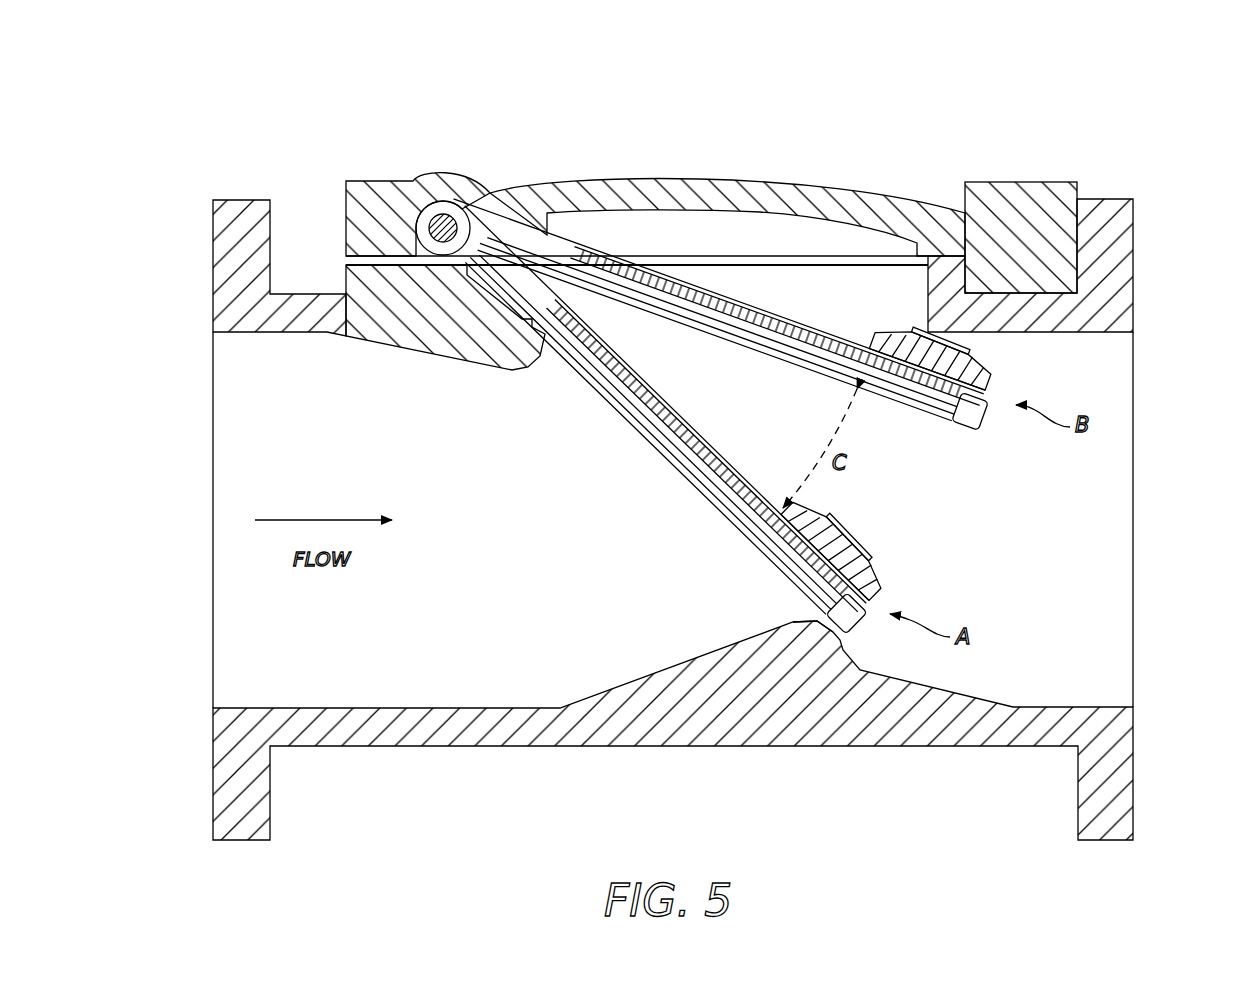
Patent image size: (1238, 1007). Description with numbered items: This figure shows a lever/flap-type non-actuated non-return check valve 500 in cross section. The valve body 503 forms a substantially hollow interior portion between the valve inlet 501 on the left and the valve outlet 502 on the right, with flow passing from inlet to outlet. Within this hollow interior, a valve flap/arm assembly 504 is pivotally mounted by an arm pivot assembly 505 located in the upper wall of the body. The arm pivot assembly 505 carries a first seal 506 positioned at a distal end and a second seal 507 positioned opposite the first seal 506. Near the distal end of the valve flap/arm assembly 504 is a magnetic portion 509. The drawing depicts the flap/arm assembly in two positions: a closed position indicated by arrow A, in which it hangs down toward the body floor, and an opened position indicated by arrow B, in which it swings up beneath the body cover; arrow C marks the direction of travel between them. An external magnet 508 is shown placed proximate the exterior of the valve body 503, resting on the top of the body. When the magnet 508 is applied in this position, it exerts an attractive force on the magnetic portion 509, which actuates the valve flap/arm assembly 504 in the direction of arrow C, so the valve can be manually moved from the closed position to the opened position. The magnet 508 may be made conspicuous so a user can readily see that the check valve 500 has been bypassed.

The non-actuated non-return/check valve 500 is at (864, 133).
The valve inlet 501 is at (287, 485).
The valve outlet 502 is at (1100, 488).
The valve body 503 is at (519, 762).
The valve flap/arm assembly 504 is at (682, 490).
The arm pivot assembly 505 is at (440, 216).
The first seal 506 is at (800, 620).
The second seal 507 is at (855, 538).
The external magnet 508 is at (1020, 188).
The magnetic portion 509 is at (890, 326).